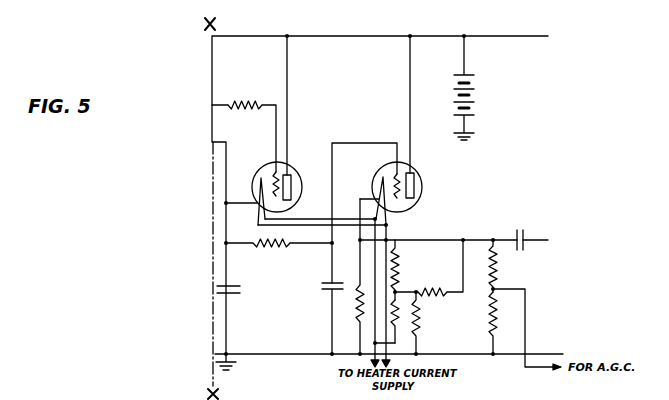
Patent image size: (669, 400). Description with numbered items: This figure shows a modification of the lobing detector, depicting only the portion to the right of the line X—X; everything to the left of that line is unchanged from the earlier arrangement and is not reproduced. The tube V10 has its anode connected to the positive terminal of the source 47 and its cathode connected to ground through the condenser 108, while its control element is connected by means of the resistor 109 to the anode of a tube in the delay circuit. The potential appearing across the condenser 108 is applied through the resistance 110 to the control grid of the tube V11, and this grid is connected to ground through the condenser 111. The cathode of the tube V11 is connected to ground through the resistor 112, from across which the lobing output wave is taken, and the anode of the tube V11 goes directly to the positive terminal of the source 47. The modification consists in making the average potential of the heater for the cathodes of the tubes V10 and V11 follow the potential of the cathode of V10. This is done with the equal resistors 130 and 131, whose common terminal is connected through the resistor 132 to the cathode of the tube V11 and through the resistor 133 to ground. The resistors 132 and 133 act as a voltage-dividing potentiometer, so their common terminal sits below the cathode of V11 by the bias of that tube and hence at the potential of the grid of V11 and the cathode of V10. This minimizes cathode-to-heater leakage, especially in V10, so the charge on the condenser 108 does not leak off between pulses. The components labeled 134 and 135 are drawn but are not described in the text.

The source 47 is at (468, 118).
The condenser 108 is at (242, 293).
The resistor 109 is at (261, 104).
The resistance 110 is at (285, 247).
The condenser 111 is at (330, 289).
The resistor 112 is at (357, 304).
The resistor 130 is at (401, 267).
The resistor 131 is at (417, 305).
The resistor 132 is at (447, 296).
The resistor 133 is at (420, 327).
The capacitor and 0.1 ohm resistor 134 is at (497, 269).
The 0.2 ohm resistor 135 is at (496, 320).
The tube V10 is at (302, 174).
The tube V11 is at (420, 174).